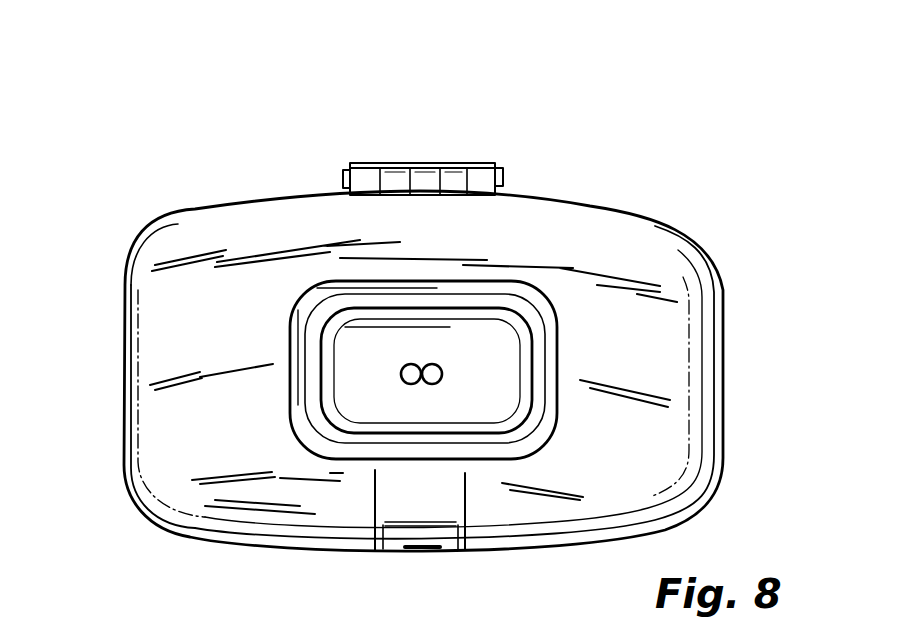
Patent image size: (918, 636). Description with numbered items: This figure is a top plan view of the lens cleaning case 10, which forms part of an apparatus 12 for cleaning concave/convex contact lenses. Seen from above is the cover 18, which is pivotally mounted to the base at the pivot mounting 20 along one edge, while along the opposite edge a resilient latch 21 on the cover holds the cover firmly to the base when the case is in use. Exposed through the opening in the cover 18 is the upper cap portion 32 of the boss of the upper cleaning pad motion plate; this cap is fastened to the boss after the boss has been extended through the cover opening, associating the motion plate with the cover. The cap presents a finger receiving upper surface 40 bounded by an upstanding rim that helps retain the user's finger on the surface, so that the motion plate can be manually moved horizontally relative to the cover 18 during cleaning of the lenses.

The lens cleaning case 10 is at (140, 243).
The apparatus 12 is at (740, 252).
The cover 18 is at (124, 353).
The pivot mounting 20 is at (504, 190).
The resilient latch 21 is at (410, 551).
The upper cap portion 32 is at (540, 329).
The finger receiving upper surface 40 is at (507, 401).